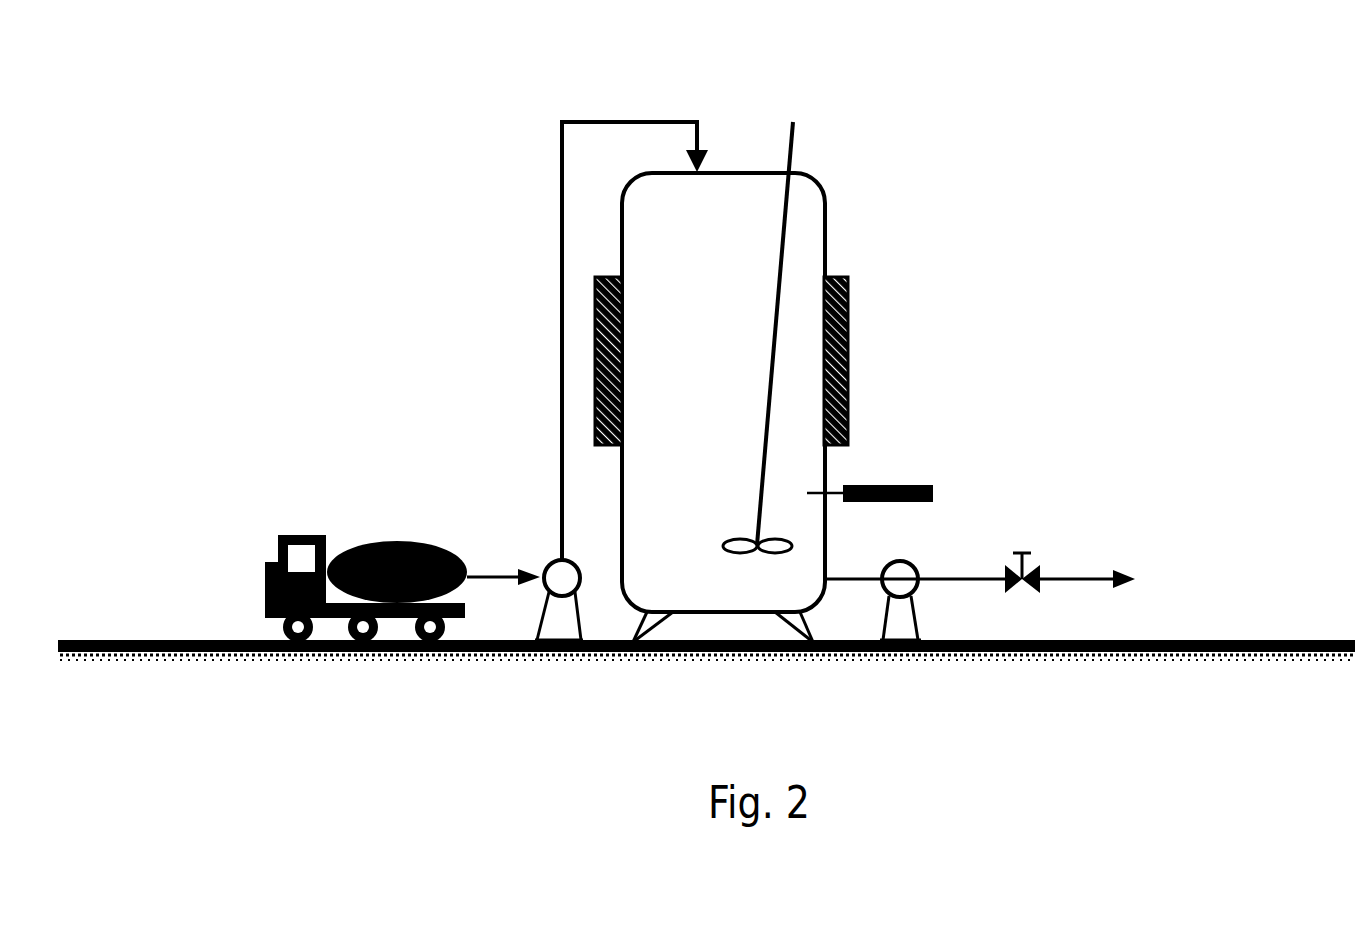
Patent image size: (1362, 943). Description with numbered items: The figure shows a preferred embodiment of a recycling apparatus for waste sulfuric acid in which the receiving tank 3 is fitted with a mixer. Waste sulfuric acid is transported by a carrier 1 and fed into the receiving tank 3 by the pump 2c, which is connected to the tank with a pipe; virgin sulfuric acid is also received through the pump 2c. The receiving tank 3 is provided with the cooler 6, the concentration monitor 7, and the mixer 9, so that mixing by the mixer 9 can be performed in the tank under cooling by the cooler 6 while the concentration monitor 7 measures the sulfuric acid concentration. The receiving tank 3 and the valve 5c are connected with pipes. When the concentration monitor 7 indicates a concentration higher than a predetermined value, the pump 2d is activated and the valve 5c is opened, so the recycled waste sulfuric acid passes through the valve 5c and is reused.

The carrier 1 is at (371, 545).
The pump 2c is at (558, 575).
The pump 2d is at (905, 573).
The receiving tank 3 is at (686, 214).
The valve 5c is at (1028, 552).
The cooler 6 is at (616, 299).
The concentration monitor 7 is at (876, 483).
The mixer 9 is at (795, 140).